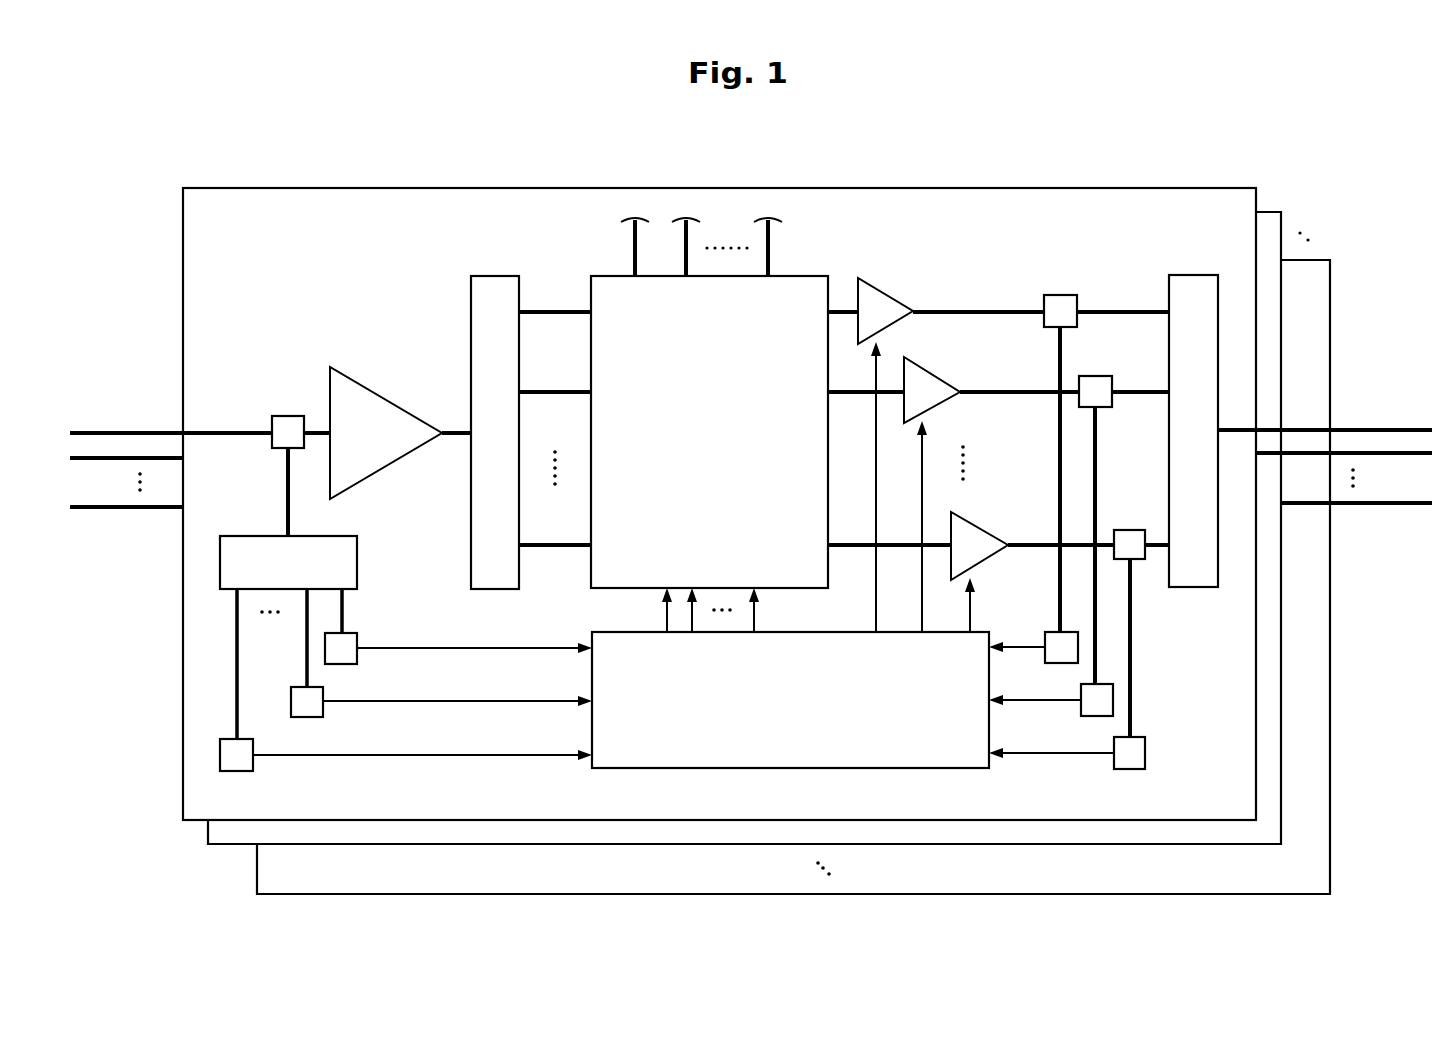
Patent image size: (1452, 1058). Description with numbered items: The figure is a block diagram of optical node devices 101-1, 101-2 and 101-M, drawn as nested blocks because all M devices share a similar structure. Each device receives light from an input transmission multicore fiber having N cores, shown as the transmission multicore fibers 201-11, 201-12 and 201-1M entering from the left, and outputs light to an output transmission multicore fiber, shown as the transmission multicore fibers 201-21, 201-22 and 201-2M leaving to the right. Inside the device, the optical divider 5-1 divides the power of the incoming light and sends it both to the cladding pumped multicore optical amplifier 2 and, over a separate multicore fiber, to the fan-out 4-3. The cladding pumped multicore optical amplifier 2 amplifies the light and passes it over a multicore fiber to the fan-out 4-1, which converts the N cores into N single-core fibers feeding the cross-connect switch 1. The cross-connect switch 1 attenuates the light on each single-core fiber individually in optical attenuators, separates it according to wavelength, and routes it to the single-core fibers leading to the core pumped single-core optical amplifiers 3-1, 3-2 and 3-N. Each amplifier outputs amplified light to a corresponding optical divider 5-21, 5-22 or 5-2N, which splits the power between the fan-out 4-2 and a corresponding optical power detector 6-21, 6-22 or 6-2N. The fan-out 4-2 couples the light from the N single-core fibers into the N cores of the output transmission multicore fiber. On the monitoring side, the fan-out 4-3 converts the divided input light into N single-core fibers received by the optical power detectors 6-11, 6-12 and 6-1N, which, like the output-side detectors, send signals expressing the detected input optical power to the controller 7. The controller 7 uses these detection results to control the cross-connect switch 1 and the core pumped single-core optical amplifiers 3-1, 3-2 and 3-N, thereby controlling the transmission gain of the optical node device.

The optical node device 101-1 is at (1140, 187).
The optical node device 101-2 is at (1263, 210).
The optical node device 101-M is at (1312, 258).
The transmission multicore fiber 201-11 is at (118, 415).
The transmission multicore fiber 201-12 is at (103, 462).
The transmission multicore fiber 201-1M is at (172, 512).
The transmission multicore fiber 201-21 is at (1393, 412).
The transmission multicore fiber 201-22 is at (1393, 456).
The transmission multicore fiber 201-2M is at (1310, 506).
The cross-connect switch 1 is at (795, 273).
The cladding pumped multicore optical amplifier 2 is at (370, 385).
The core pumped single-core optical amplifier 3-1 is at (880, 291).
The core pumped single-core optical amplifier 3-2 is at (925, 370).
The core pumped single-core optical amplifier 3-N is at (975, 523).
The fan-out 4-1 is at (494, 275).
The fan-out 4-2 is at (1193, 274).
The fan-out 4-3 is at (317, 534).
The optical divider 5-1 is at (289, 414).
The optical divider 5-21 is at (1058, 294).
The optical divider 5-22 is at (1108, 362).
The optical divider 5-2N is at (1140, 560).
The optical power detector 6-11 is at (350, 632).
The optical power detector 6-12 is at (305, 718).
The optical power detector 6-1N is at (237, 772).
The optical power detector 6-21 is at (1057, 630).
The optical power detector 6-22 is at (1097, 717).
The optical power detector 6-2N is at (1146, 753).
The controller 7 is at (795, 631).